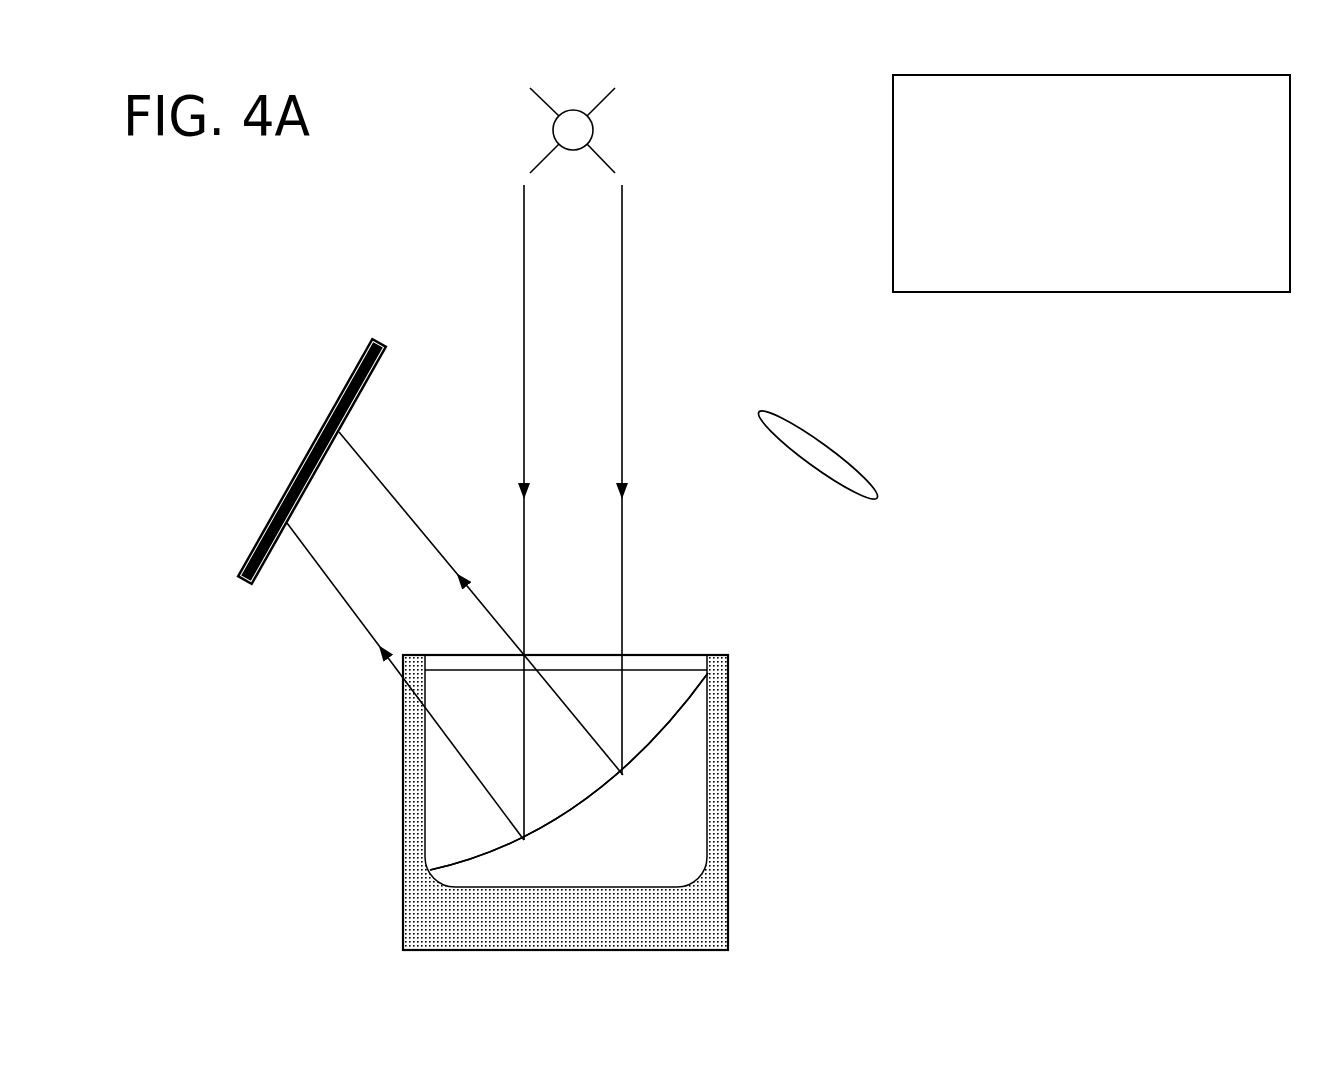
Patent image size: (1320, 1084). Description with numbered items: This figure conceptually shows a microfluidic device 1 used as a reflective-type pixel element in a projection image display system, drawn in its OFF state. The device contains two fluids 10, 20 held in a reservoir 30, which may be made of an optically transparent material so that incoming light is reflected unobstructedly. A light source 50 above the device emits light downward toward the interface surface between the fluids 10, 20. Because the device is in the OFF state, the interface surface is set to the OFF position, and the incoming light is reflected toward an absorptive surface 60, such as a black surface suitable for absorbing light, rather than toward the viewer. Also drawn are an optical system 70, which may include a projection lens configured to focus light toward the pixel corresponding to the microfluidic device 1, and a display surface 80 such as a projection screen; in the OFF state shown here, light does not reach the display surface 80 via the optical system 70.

The microfluidic device 1 is at (617, 694).
The fluid 10 is at (569, 771).
The fluid 20 is at (569, 771).
The reservoir 30 is at (708, 907).
The light source 50 is at (595, 130).
The absorptive surface 60 is at (311, 461).
The optical system 70 is at (837, 467).
The display surface 80 is at (1091, 183).